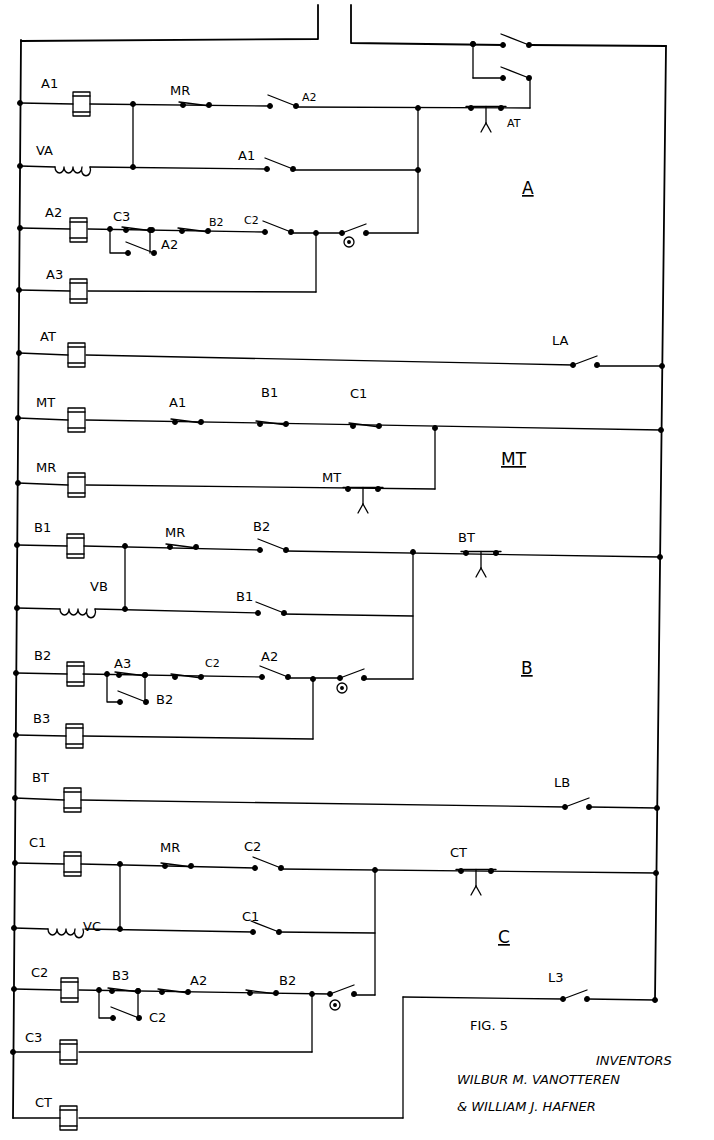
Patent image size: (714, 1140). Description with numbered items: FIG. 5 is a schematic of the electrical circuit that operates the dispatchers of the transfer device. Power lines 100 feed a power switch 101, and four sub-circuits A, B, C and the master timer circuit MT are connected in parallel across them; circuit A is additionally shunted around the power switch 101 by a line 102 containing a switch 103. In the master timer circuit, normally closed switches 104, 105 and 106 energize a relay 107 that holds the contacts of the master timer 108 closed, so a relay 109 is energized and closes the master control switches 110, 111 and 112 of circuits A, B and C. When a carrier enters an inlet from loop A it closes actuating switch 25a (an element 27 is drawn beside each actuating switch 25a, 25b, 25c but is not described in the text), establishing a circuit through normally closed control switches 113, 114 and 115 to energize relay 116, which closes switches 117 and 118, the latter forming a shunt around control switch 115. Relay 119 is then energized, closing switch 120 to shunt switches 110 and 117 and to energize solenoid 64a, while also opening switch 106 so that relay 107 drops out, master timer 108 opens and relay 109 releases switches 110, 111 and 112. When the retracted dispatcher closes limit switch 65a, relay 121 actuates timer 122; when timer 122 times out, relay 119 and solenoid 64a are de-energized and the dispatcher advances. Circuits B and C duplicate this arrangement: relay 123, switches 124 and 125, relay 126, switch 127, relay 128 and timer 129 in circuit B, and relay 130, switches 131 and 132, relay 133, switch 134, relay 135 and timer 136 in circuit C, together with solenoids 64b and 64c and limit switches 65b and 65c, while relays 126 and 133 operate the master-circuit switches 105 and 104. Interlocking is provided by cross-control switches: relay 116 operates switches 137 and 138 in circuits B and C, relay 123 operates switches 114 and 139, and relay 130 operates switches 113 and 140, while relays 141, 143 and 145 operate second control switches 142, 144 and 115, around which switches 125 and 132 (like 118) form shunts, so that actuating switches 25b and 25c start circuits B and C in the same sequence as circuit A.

The power lines 100 is at (318, 21).
The power switch 101 is at (511, 45).
The line 102 is at (473, 63).
The switch 103 is at (526, 75).
The normally closed switch 104 is at (373, 426).
The normally closed switch 105 is at (279, 424).
The normally closed switch 106 is at (196, 423).
The relay 107 is at (84, 425).
The master timer 108 is at (366, 488).
The relay 109 is at (86, 488).
The master control switch 110 is at (198, 101).
The master control switch 111 is at (192, 548).
The master control switch 112 is at (186, 867).
The control switch 113 is at (279, 229).
The control switch 114 is at (197, 228).
The control switch 115 is at (136, 226).
The relay 116 is at (76, 231).
The switch 117 is at (278, 97).
The switch 118 is at (143, 253).
The relay 119 is at (91, 98).
The switch 120 is at (277, 168).
The relay 121 is at (85, 360).
The timer 122 is at (486, 105).
The relay 123 is at (78, 670).
The switch 124 is at (279, 551).
The switch 125 is at (141, 700).
The relay 126 is at (81, 556).
The switch 127 is at (273, 616).
The relay 128 is at (81, 803).
The timer 129 is at (494, 553).
The relay 130 is at (87, 970).
The switch 131 is at (274, 867).
The switch 132 is at (135, 1020).
The relay 133 is at (77, 867).
The switch 134 is at (277, 928).
The relay 135 is at (75, 1118).
The timer 136 is at (481, 870).
The control switch 137 is at (281, 677).
The control switch 138 is at (179, 990).
The control switch 139 is at (256, 990).
The control switch 140 is at (193, 671).
The relay 141 is at (86, 295).
The control switch 142 is at (140, 672).
The relay 143 is at (82, 738).
The control switch 144 is at (131, 990).
The relay 145 is at (85, 1028).
The actuating switch 25a is at (359, 238).
The actuating switch 25b is at (354, 677).
The actuating switch 25c is at (348, 989).
The switch actuator 27 is at (347, 247).
The solenoid 64a is at (88, 150).
The solenoid 64b is at (74, 603).
The solenoid 64c is at (67, 925).
The limit switch 65a is at (587, 366).
The limit switch 65b is at (579, 807).
The limit switch 65c is at (576, 998).